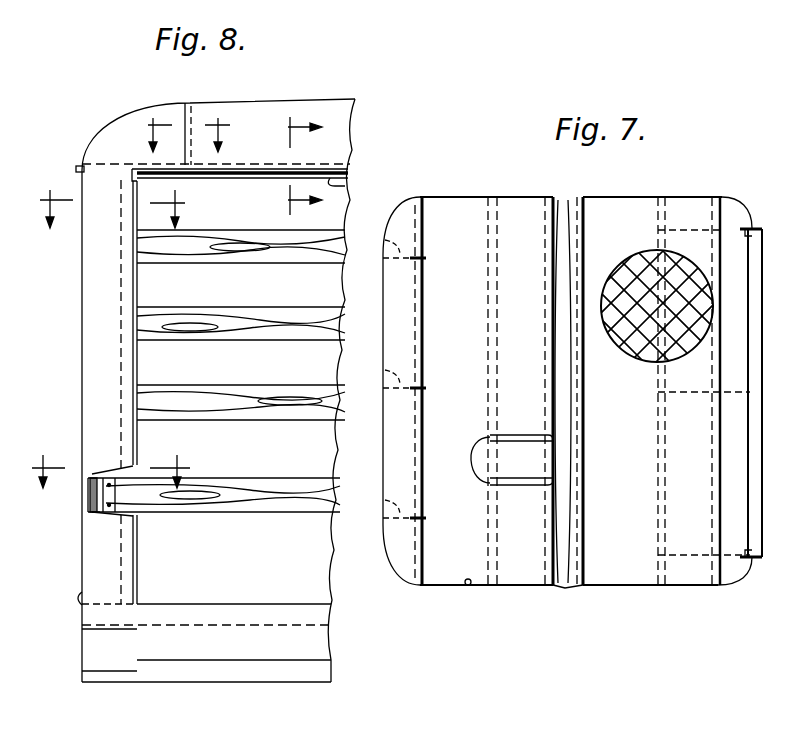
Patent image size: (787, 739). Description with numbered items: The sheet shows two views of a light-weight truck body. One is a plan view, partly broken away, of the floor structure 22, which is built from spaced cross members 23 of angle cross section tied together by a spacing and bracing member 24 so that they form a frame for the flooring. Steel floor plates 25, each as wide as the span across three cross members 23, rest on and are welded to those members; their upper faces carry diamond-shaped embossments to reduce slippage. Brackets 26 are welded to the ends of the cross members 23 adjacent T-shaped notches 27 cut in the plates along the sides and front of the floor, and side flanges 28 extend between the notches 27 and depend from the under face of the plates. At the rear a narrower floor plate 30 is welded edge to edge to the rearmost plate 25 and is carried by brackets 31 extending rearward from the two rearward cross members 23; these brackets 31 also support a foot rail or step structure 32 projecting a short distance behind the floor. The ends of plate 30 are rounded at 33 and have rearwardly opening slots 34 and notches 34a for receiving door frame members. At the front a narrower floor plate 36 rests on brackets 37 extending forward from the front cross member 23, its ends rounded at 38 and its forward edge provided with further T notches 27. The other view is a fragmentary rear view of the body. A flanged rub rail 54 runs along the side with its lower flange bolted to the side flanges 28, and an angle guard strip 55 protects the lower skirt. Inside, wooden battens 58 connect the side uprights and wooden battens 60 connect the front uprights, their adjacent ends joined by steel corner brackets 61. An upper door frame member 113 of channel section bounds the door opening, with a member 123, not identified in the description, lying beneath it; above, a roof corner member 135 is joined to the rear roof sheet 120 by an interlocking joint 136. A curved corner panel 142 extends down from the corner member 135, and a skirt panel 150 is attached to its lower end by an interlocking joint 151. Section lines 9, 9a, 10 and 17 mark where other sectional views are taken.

In FIG. 8, the section line 9 is at (294, 166).
In FIG. 8, the section line 9a is at (183, 135).
In FIG. 8, the section line 10 is at (108, 209).
In FIG. 8, the section line 17 is at (109, 471).
In FIG. 8, the floor structure 22 is at (230, 606).
In FIG. 7, the floor structure 22 is at (648, 190).
In FIG. 7, the cross members 23 is at (497, 266).
In FIG. 7, the spacing and bracing member 24 is at (513, 445).
In FIG. 7, the steel floor plates 25 is at (460, 204).
In FIG. 7, the brackets 26 is at (426, 228).
In FIG. 7, the T-shaped notches 27 is at (408, 260).
In FIG. 7, the side flanges 28 is at (476, 205).
In FIG. 7, the floor plate 30 is at (742, 454).
In FIG. 7, the brackets 31 is at (692, 222).
In FIG. 8, the foot rail or step structure 32 is at (244, 656).
In FIG. 7, the foot rail or step structure 32 is at (750, 505).
In FIG. 7, the rounded ends 33 is at (733, 206).
In FIG. 7, the rearwardly opening slots 34 is at (741, 233).
In FIG. 7, the notches 34a is at (754, 226).
In FIG. 7, the floor plate 36 is at (393, 338).
In FIG. 7, the brackets 37 is at (384, 240).
In FIG. 7, the rounded ends 38 is at (396, 213).
In FIG. 8, the flanged rub rail 54 is at (72, 598).
In FIG. 8, the angle guard strip 55 is at (88, 676).
In FIG. 8, the wooden battens 58 is at (90, 492).
In FIG. 8, the wooden battens 60 is at (270, 255).
In FIG. 8, the steel corner brackets 61 is at (100, 510).
In FIG. 8, the upper door frame member 113 is at (316, 161).
In FIG. 8, the rear roof sheet 120 is at (282, 102).
In FIG. 8, the header rail 123 is at (346, 175).
In FIG. 8, the roof corner members 135 is at (133, 116).
In FIG. 8, the interlocking joints 136 is at (197, 112).
In FIG. 8, the corner panel 142 is at (96, 262).
In FIG. 8, the skirt panel 150 is at (85, 657).
In FIG. 8, the interlocking joint 151 is at (92, 631).